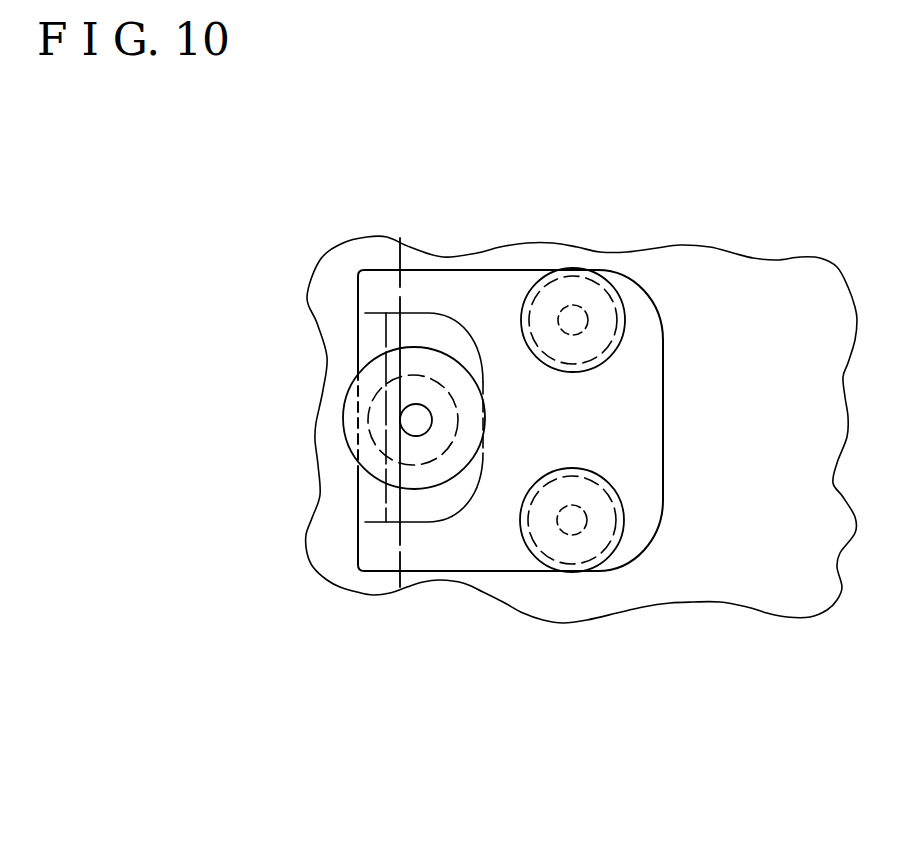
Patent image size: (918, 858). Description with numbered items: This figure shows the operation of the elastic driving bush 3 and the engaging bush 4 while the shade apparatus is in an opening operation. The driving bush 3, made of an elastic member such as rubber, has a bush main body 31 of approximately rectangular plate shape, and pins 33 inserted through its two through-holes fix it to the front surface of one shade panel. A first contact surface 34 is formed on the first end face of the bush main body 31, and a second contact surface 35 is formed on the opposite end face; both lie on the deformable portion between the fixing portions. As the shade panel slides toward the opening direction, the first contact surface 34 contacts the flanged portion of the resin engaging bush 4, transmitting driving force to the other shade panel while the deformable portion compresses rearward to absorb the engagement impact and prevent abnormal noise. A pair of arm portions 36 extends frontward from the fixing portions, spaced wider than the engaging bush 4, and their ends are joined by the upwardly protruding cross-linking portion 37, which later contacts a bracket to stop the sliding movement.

The driving bush 3 is at (510, 409).
The engaging bush 4 is at (343, 407).
The bush main body 31 is at (537, 418).
The pins 33 is at (576, 322).
The first contact surface 34 is at (390, 387).
The second contact surface 35 is at (665, 430).
The arm portions 36 is at (386, 293).
The cross-linking portion 37 is at (372, 500).